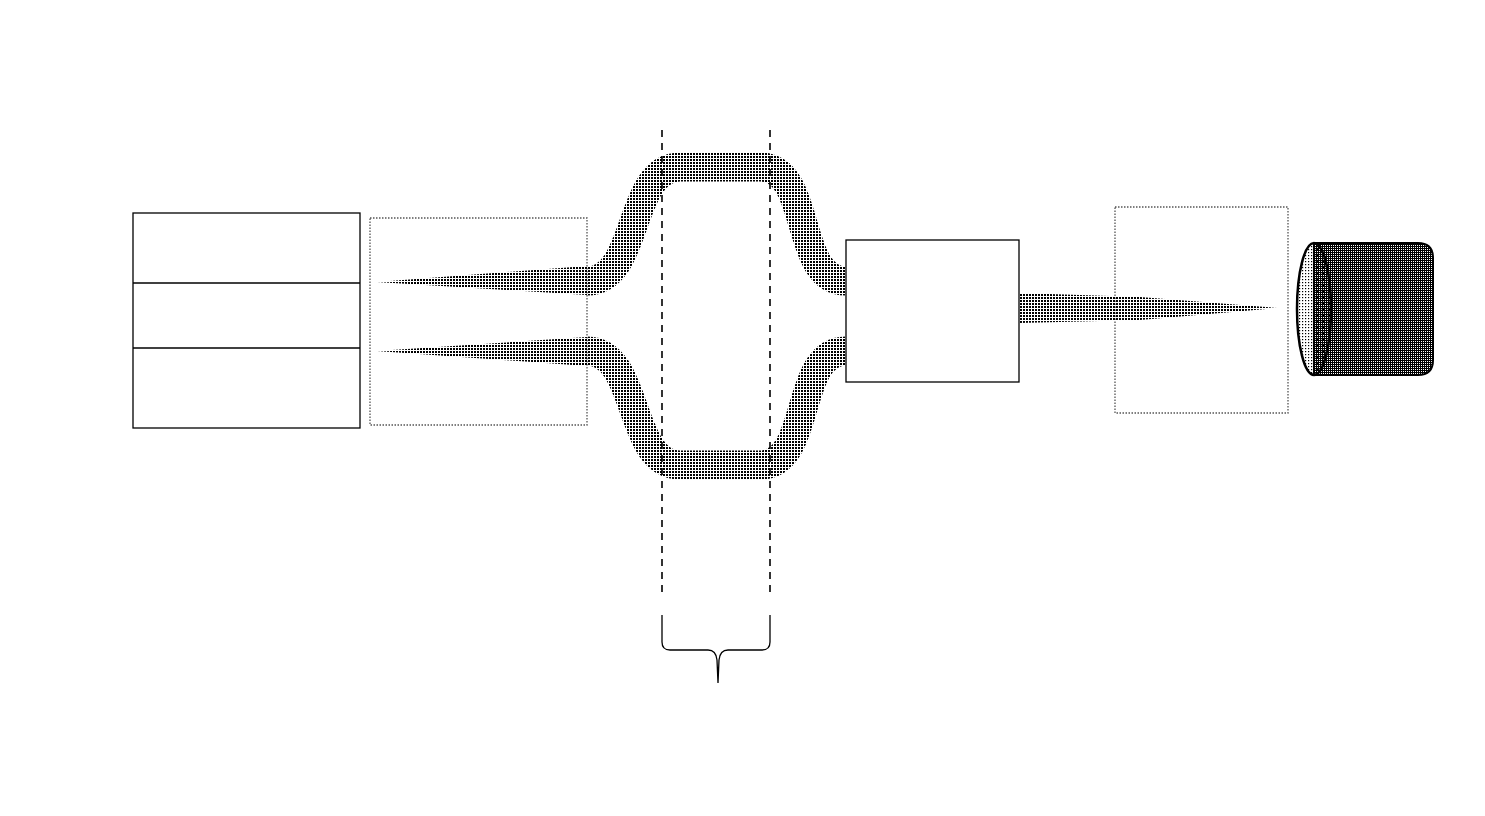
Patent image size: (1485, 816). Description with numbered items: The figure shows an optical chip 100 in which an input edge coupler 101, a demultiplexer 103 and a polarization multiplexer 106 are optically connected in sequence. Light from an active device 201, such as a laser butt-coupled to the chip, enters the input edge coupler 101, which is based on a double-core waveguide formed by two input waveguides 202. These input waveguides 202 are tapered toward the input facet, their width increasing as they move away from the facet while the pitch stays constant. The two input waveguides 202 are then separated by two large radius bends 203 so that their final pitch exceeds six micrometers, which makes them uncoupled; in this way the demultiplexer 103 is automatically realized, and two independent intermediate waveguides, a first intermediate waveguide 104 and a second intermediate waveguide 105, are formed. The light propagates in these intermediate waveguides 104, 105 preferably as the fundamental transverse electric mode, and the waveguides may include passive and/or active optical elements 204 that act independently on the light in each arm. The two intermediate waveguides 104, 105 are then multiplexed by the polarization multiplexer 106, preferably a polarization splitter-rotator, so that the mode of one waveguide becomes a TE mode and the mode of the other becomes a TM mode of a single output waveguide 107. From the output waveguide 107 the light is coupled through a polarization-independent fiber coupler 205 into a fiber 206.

The optical chip 100 is at (958, 37).
The input edge coupler 101 is at (512, 215).
The demultiplexer 103 is at (720, 306).
The first intermediate waveguide 104 is at (730, 168).
The second intermediate waveguide 105 is at (717, 477).
The polarization multiplexer 106 is at (932, 237).
The output waveguide 107 is at (1162, 310).
The active device 201 is at (287, 208).
The input waveguides 202 is at (423, 280).
The large radius bends 203 is at (642, 168).
The passive and/or active optical elements 204 is at (716, 433).
The polarization-independent fiber coupler 205 is at (1236, 205).
The fiber 206 is at (1382, 240).